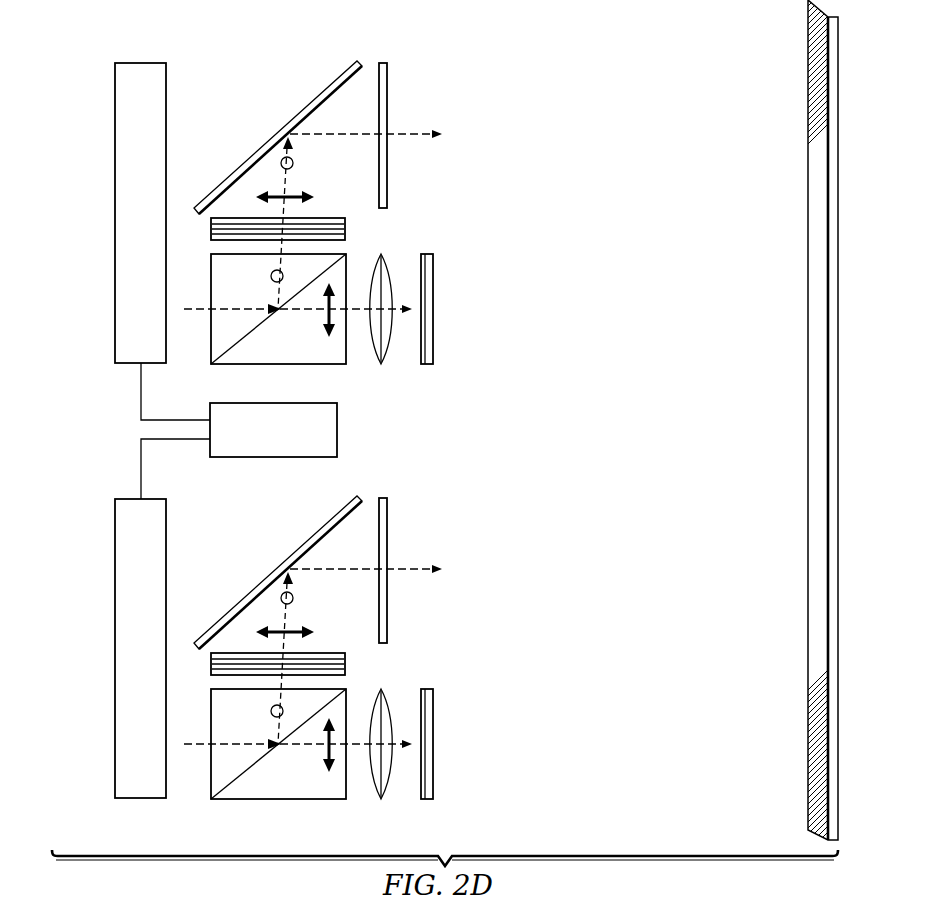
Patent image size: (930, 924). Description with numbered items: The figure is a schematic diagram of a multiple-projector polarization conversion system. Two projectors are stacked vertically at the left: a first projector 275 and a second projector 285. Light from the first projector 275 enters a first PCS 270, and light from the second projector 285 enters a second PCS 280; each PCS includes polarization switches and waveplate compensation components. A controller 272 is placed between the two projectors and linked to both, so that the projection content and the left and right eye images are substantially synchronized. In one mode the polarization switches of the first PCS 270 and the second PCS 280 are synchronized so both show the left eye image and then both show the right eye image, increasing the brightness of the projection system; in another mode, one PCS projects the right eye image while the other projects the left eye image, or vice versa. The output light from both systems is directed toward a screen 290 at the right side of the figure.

The first PCS 270 is at (236, 60).
The controller 272 is at (337, 432).
The first projector 275 is at (114, 101).
The second PCS 280 is at (438, 476).
The second projector 285 is at (114, 760).
The screen 290 is at (815, 525).